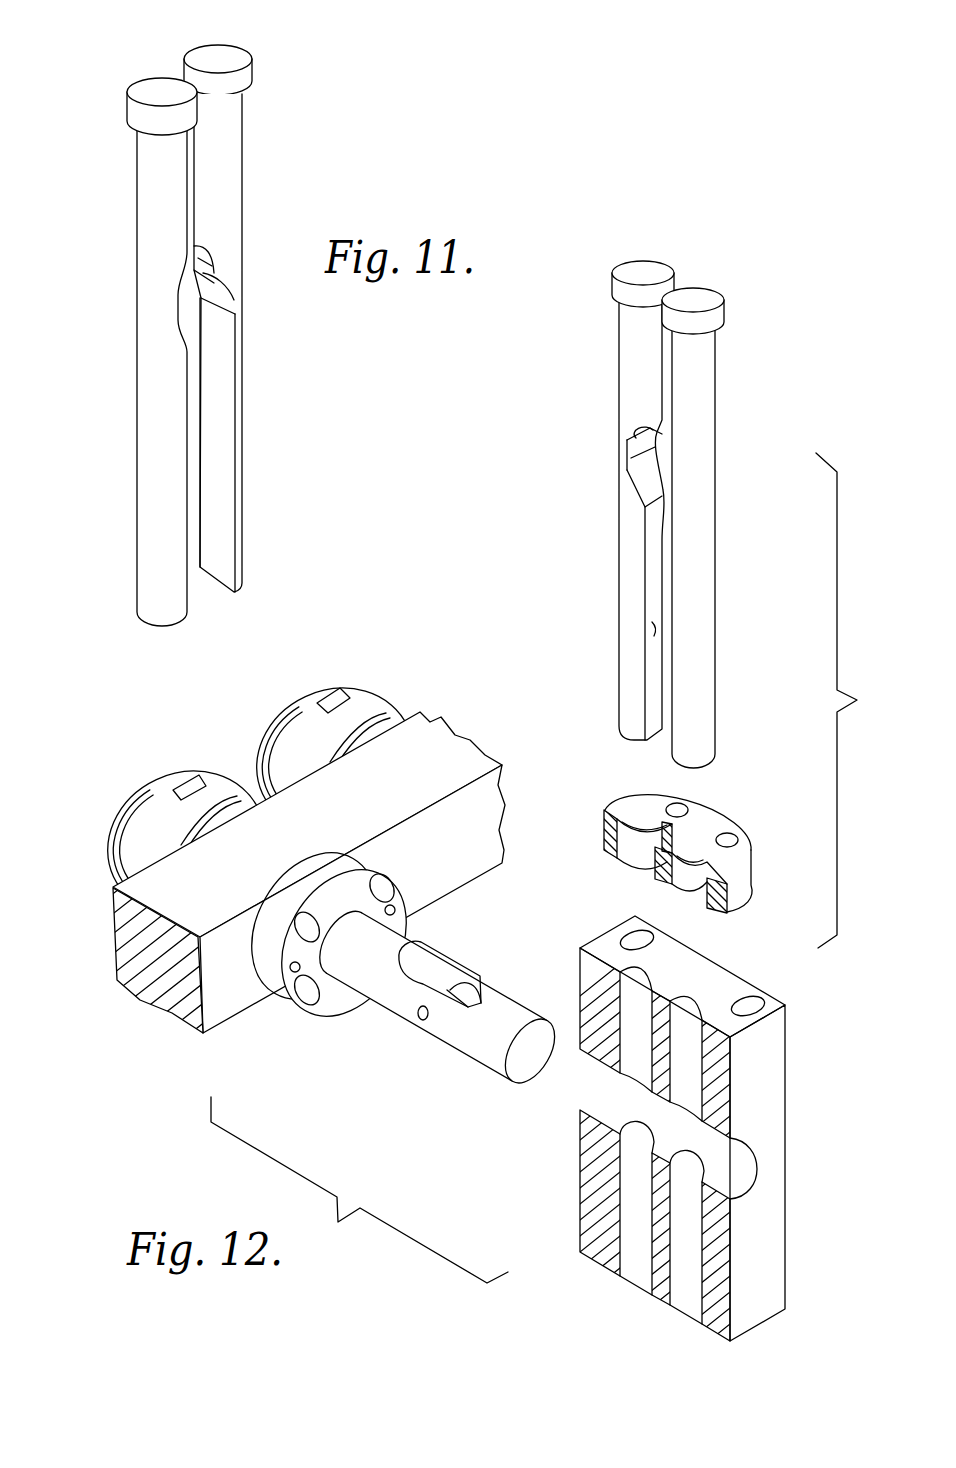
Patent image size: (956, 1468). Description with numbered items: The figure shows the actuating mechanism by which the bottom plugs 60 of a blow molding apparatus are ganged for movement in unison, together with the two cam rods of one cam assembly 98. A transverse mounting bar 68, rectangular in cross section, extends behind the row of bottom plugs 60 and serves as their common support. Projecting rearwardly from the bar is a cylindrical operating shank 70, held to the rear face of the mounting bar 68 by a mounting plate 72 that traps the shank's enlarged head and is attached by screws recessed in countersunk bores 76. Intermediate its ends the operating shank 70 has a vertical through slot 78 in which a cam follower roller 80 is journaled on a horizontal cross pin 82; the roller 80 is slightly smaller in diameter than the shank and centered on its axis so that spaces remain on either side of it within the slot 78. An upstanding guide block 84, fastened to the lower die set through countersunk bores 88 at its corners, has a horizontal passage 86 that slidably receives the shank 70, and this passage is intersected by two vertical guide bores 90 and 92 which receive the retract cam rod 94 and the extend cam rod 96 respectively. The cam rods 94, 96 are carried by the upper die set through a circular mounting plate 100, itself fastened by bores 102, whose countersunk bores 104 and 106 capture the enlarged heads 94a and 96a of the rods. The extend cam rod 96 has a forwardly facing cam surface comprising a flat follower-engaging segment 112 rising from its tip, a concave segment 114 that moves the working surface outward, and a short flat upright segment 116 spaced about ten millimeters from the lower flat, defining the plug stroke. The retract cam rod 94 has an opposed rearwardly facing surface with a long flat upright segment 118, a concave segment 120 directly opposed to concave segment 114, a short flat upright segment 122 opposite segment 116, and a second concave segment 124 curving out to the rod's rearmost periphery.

In FIG. 12, the bottom plug 60 is at (371, 704).
In FIG. 12, the transverse mounting bar 68 is at (215, 1020).
In FIG. 12, the operating shank 70 is at (487, 1065).
In FIG. 12, the mounting plate 72 is at (333, 990).
In FIG. 12, the countersunk bores 76 is at (390, 884).
In FIG. 12, the vertical through slot 78 is at (425, 953).
In FIG. 12, the roller 80 is at (460, 985).
In FIG. 12, the cross pin 82 is at (421, 1020).
In FIG. 12, the guide block 84 is at (786, 1215).
In FIG. 12, the horizontal passage 86 is at (752, 1162).
In FIG. 12, the countersunk bores 88 is at (632, 934).
In FIG. 12, the guide bore 90 is at (645, 968).
In FIG. 12, the guide bore 92 is at (695, 995).
In FIG. 11, the retract cam rod 94 is at (135, 191).
In FIG. 12, the retract cam rod 94 is at (612, 360).
In FIG. 11, the enlarged head 94a is at (136, 100).
In FIG. 12, the enlarged head 94a is at (613, 290).
In FIG. 11, the extend cam rod 96 is at (250, 152).
In FIG. 12, the extend cam rod 96 is at (716, 411).
In FIG. 11, the enlarged head 96a is at (244, 64).
In FIG. 12, the enlarged head 96a is at (712, 297).
In FIG. 11, the cam assembly 98 is at (136, 68).
In FIG. 12, the cam assembly 98 is at (742, 328).
In FIG. 12, the circular mounting plate 100 is at (740, 808).
In FIG. 12, the bores 102 is at (683, 805).
In FIG. 12, the countersunk bore 104 is at (625, 820).
In FIG. 12, the countersunk bore 106 is at (712, 860).
In FIG. 11, the flat follower-engaging segment 112 is at (218, 440).
In FIG. 11, the concave segment 114 is at (222, 303).
In FIG. 11, the short flat upright segment 116 is at (216, 268).
In FIG. 12, the flat upright segment 118 is at (645, 628).
In FIG. 12, the concave segment 120 is at (640, 488).
In FIG. 12, the short flat upright segment 122 is at (635, 458).
In FIG. 12, the second concave segment 124 is at (640, 432).